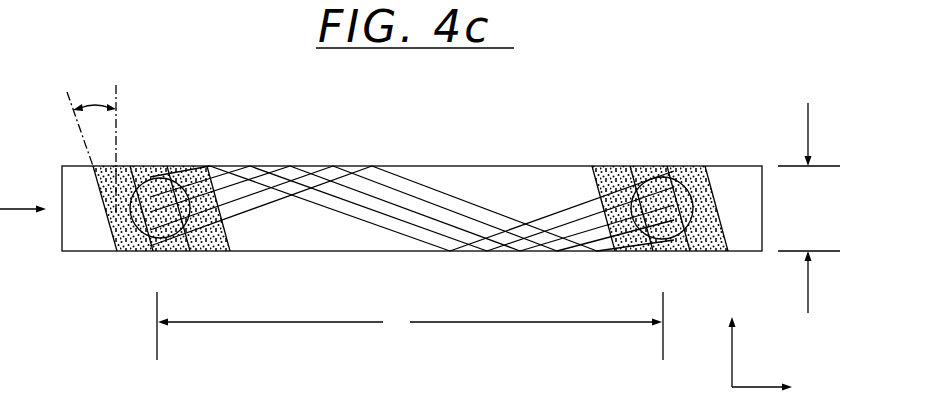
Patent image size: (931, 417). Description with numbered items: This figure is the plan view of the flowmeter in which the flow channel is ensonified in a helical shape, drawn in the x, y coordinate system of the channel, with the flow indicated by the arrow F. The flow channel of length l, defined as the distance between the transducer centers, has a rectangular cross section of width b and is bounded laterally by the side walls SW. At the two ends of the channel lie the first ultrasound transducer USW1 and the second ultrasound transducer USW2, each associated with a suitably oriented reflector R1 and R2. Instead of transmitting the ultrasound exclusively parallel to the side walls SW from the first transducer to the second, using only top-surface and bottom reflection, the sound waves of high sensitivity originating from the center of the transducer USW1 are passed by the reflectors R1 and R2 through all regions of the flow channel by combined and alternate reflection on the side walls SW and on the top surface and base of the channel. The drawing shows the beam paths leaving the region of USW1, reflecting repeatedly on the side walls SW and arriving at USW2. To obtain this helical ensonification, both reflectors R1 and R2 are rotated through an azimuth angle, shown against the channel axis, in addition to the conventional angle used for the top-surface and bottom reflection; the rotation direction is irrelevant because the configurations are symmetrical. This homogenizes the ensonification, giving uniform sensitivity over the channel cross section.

The reflector R1 is at (140, 253).
The reflector R2 is at (677, 253).
The ultrasound transducer USW1 is at (139, 192).
The ultrasound transducer USW2 is at (655, 178).
The side walls SW is at (437, 165).
The applied force F is at (20, 172).
The length of flow channel l is at (410, 326).
The width b is at (809, 208).
The x axis x is at (776, 385).
The y axis y is at (745, 351).